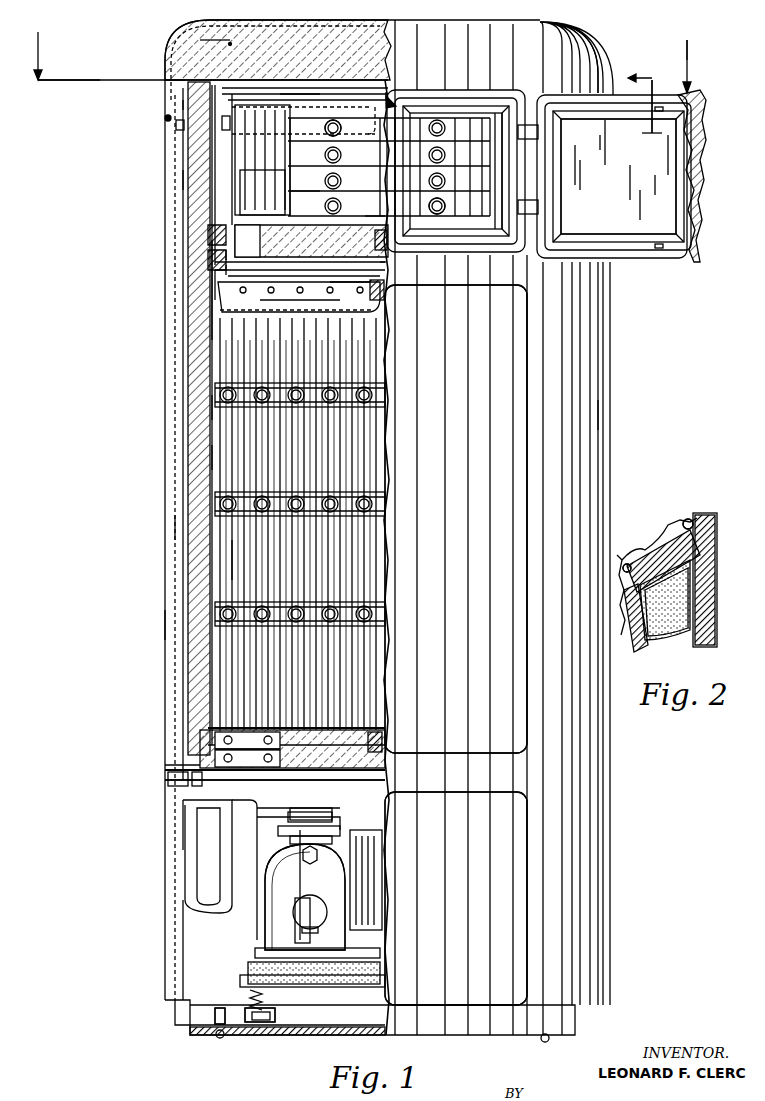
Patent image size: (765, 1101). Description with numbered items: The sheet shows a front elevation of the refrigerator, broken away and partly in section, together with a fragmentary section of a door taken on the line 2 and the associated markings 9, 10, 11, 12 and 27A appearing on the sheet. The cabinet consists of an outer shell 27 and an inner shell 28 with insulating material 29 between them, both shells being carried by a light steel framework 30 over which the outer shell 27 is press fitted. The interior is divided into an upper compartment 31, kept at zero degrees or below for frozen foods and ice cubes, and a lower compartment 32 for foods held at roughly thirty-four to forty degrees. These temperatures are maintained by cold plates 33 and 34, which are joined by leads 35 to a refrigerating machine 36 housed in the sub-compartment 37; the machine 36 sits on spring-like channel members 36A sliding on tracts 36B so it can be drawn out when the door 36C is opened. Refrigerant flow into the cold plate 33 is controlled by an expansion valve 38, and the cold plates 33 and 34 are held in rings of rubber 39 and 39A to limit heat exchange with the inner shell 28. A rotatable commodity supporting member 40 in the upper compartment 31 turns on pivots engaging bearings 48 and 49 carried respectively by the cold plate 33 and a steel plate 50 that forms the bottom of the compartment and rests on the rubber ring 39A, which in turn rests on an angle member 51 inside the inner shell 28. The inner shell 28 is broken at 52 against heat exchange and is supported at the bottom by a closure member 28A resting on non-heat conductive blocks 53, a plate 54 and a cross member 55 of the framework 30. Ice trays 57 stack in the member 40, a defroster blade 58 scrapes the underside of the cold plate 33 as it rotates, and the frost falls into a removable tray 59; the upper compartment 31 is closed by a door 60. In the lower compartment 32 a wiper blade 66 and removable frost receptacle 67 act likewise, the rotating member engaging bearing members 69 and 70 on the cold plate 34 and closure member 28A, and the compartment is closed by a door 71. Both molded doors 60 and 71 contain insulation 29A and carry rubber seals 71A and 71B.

In FIG. 1, the section line 9- 9 is at (362, 46).
In FIG. 1, the refrigerator cabinet 10 is at (230, 44).
In FIG. 1, the outer shell 11 is at (215, 248).
In FIG. 1, the inner liner 12 is at (175, 625).
In FIG. 1, the section line 2— 2 is at (652, 108).
In FIG. 1, the outer shell 27 is at (594, 418).
In FIG. 1, the top of door panel 27A is at (596, 48).
In FIG. 1, the inner shell 28 is at (215, 457).
In FIG. 1, the bottom closure member 28A is at (240, 735).
In FIG. 1, the insulating material 29 is at (215, 408).
In FIG. 2, the insulation 29A is at (668, 612).
In FIG. 1, the steel framework 30 is at (178, 527).
In FIG. 1, the upper compartment 31 is at (212, 180).
In FIG. 1, the lower compartment 32 is at (237, 556).
In FIG. 1, the cold plate 33 is at (386, 95).
In FIG. 1, the cold plate 34 is at (386, 268).
In FIG. 1, the leads 35 is at (190, 825).
In FIG. 1, the refrigerating machine 36 is at (275, 925).
In FIG. 1, the spring-like channel members 36A is at (270, 1018).
In FIG. 1, the tracts 36B is at (210, 1018).
In FIG. 1, the door 36C is at (495, 883).
In FIG. 1, the sub-compartment 37 is at (192, 930).
In FIG. 1, the expansion valve 38 is at (300, 95).
In FIG. 1, the ring of rubber 39 is at (188, 106).
In FIG. 1, the rubber ring 39A is at (232, 240).
In FIG. 1, the commodity supporting member 40 is at (262, 192).
In FIG. 1, the bearing 48 is at (392, 102).
In FIG. 1, the bearing 49 is at (372, 228).
In FIG. 1, the steel plate 50 is at (290, 216).
In FIG. 1, the angle member 51 is at (220, 282).
In FIG. 1, the break 52 is at (222, 230).
In FIG. 1, the non-heat conductive blocks 53 is at (258, 738).
In FIG. 1, the plate 54 is at (180, 762).
In FIG. 1, the cross member 55 is at (178, 778).
In FIG. 1, the ice trays 57 is at (373, 169).
In FIG. 1, the defroster blade 58 is at (305, 98).
In FIG. 1, the removable tray 59 is at (182, 134).
In FIG. 1, the door 60 is at (632, 222).
In FIG. 1, the wiper blade 66 is at (341, 282).
In FIG. 1, the removable frost receptacle 67 is at (310, 302).
In FIG. 1, the bearing member 69 is at (378, 298).
In FIG. 1, the bearing member 70 is at (381, 735).
In FIG. 1, the door 71 is at (500, 500).
In FIG. 2, the rubber seal 71A is at (628, 565).
In FIG. 2, the rubber seal 71B is at (688, 520).